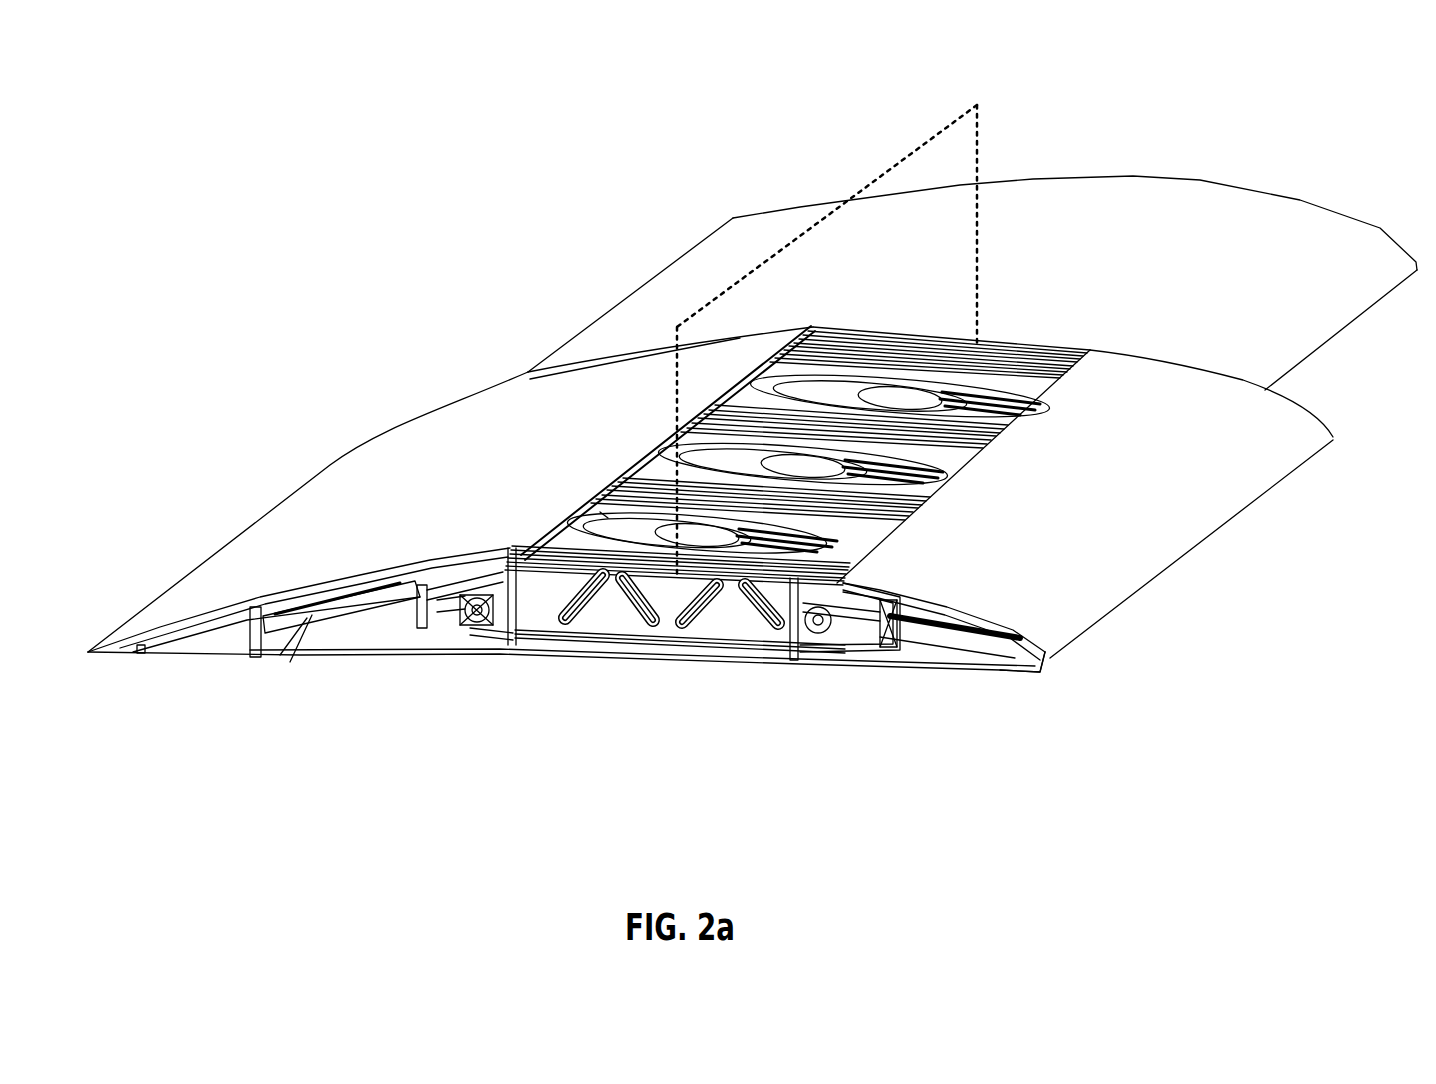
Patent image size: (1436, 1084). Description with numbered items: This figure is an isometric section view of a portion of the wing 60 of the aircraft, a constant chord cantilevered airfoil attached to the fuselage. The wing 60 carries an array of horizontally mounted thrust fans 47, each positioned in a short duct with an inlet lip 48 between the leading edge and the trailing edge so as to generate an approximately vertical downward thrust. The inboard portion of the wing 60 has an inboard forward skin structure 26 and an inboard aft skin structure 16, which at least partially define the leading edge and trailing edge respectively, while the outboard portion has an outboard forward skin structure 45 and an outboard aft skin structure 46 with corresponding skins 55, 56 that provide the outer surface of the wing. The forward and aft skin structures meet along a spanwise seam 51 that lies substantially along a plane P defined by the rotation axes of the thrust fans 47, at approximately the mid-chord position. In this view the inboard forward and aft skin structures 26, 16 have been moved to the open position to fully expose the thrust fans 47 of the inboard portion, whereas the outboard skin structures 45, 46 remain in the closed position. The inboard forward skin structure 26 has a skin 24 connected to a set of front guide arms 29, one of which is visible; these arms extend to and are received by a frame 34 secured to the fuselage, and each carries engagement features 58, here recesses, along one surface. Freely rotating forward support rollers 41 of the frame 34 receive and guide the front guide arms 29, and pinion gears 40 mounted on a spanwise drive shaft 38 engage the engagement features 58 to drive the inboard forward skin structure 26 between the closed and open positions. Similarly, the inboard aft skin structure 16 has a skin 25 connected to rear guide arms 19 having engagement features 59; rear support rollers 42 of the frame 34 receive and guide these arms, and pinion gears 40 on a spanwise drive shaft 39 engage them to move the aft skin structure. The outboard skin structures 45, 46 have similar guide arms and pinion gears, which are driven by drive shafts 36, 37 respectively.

The inboard aft skin structure 16 is at (358, 500).
The rear guide arms 19 is at (310, 613).
The skin 24 is at (1063, 593).
The skin 25 is at (220, 577).
The inboard forward skin structure 26 is at (1107, 547).
The front guide arms 29 is at (937, 637).
The frame 34 is at (628, 660).
The drive shaft 36 is at (820, 653).
The drive shaft 37 is at (443, 625).
The spanwise drive shaft 38 is at (803, 647).
The spanwise drive shaft 39 is at (490, 602).
The pinion gears 40 is at (520, 612).
The forward support rollers 41 is at (870, 668).
The rear support rollers 42 is at (387, 585).
The outboard forward skin structure 45 is at (1213, 317).
The outboard aft skin structure 46 is at (710, 277).
The thrust fans 47 is at (770, 477).
The inlet lip 48 is at (592, 490).
The spanwise seam 51 is at (1125, 232).
The skin 55 is at (1307, 230).
The skin 56 is at (773, 230).
The engagement features 58 is at (973, 627).
The engagement features 59 is at (333, 615).
The wing 60 is at (457, 322).
The plane P is at (952, 163).